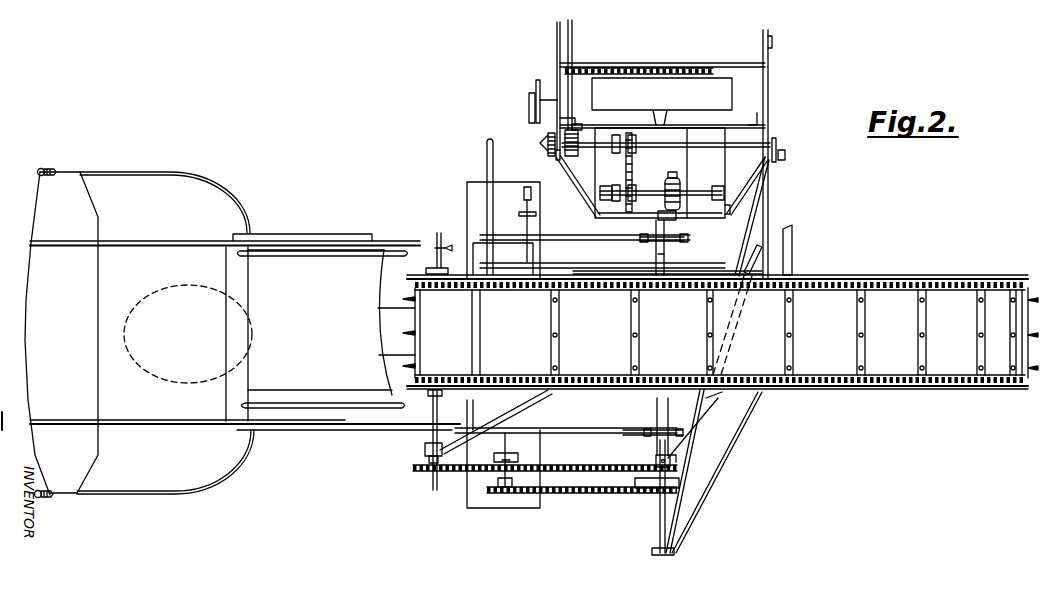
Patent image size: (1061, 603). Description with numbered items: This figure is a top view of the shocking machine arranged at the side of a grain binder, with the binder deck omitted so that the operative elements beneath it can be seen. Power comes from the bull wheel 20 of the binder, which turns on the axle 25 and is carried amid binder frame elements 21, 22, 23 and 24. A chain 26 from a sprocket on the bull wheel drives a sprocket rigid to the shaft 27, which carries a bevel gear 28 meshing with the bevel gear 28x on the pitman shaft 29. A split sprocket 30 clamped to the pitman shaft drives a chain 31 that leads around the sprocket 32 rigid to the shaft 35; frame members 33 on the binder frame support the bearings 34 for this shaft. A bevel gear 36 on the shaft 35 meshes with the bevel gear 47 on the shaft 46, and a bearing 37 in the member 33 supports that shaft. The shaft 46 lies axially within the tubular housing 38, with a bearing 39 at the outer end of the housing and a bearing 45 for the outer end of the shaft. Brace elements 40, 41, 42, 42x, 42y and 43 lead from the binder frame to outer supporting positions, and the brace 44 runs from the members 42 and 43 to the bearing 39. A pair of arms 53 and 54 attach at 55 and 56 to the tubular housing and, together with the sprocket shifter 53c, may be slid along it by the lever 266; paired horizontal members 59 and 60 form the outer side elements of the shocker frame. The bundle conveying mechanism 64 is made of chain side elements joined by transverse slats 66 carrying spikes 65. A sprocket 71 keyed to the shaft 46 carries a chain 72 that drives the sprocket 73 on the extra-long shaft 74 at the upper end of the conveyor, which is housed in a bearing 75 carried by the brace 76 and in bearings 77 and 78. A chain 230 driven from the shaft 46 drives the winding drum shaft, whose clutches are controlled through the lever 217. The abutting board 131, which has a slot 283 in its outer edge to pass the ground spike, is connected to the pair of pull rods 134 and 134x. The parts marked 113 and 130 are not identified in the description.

The bull wheel 20 is at (662, 101).
The frame element 21 is at (708, 63).
The frame element 22 is at (755, 120).
The frame element 23 is at (769, 102).
The frame element 24 is at (550, 80).
The axle 25 is at (662, 68).
The chain 26 is at (582, 76).
The shaft 27 is at (574, 50).
The bevel gear 28 is at (575, 140).
The bevel gear 28x is at (556, 160).
The pitman shaft 29 is at (646, 145).
The split sprocket 30 is at (631, 150).
The chain 31 is at (622, 155).
The sprocket 32 is at (628, 198).
The frame member 33 is at (600, 177).
The bearing 34 is at (662, 187).
The shaft 35 is at (665, 190).
The bevel gear 36 is at (37, 172).
The bearing 37 is at (674, 218).
The tubular housing 38 is at (670, 253).
The bearing 39 is at (656, 456).
The brace element 40 is at (737, 207).
The brace element 41 is at (582, 196).
The brace element 42 is at (770, 225).
The brace element 42x is at (688, 480).
The brace element 42y is at (733, 448).
The brace element 43 is at (746, 250).
The brace 44 is at (695, 425).
The bearing 45 is at (660, 555).
The shaft 46 is at (655, 535).
The bevel gear 47 is at (656, 216).
The arm 53 is at (572, 428).
The sprocket shifter 53c is at (640, 500).
The arm 54 is at (578, 238).
The attachment 55 is at (670, 428).
The attachment 56 is at (654, 244).
The horizontal member 59 is at (383, 428).
The horizontal member 60 is at (395, 240).
The bundle conveying mechanism 64 is at (895, 375).
The spike 65 is at (790, 333).
The transverse slat 66 is at (792, 358).
The sprocket 71 is at (676, 456).
The chain 72 is at (580, 470).
The sprocket 73 is at (422, 474).
The shaft 74 is at (439, 232).
The bearing 75 is at (424, 452).
The brace 76 is at (462, 436).
The bearing 77 is at (426, 392).
The bearing 78 is at (436, 267).
The box 113 is at (331, 322).
The rail 130 is at (160, 426).
The abutting board 131 is at (61, 333).
The pull rod 134 is at (134, 493).
The pull rod 134x is at (128, 176).
The lever 217 is at (524, 192).
The chain 230 is at (562, 496).
The lever 266 is at (528, 117).
The slot 283 is at (30, 336).